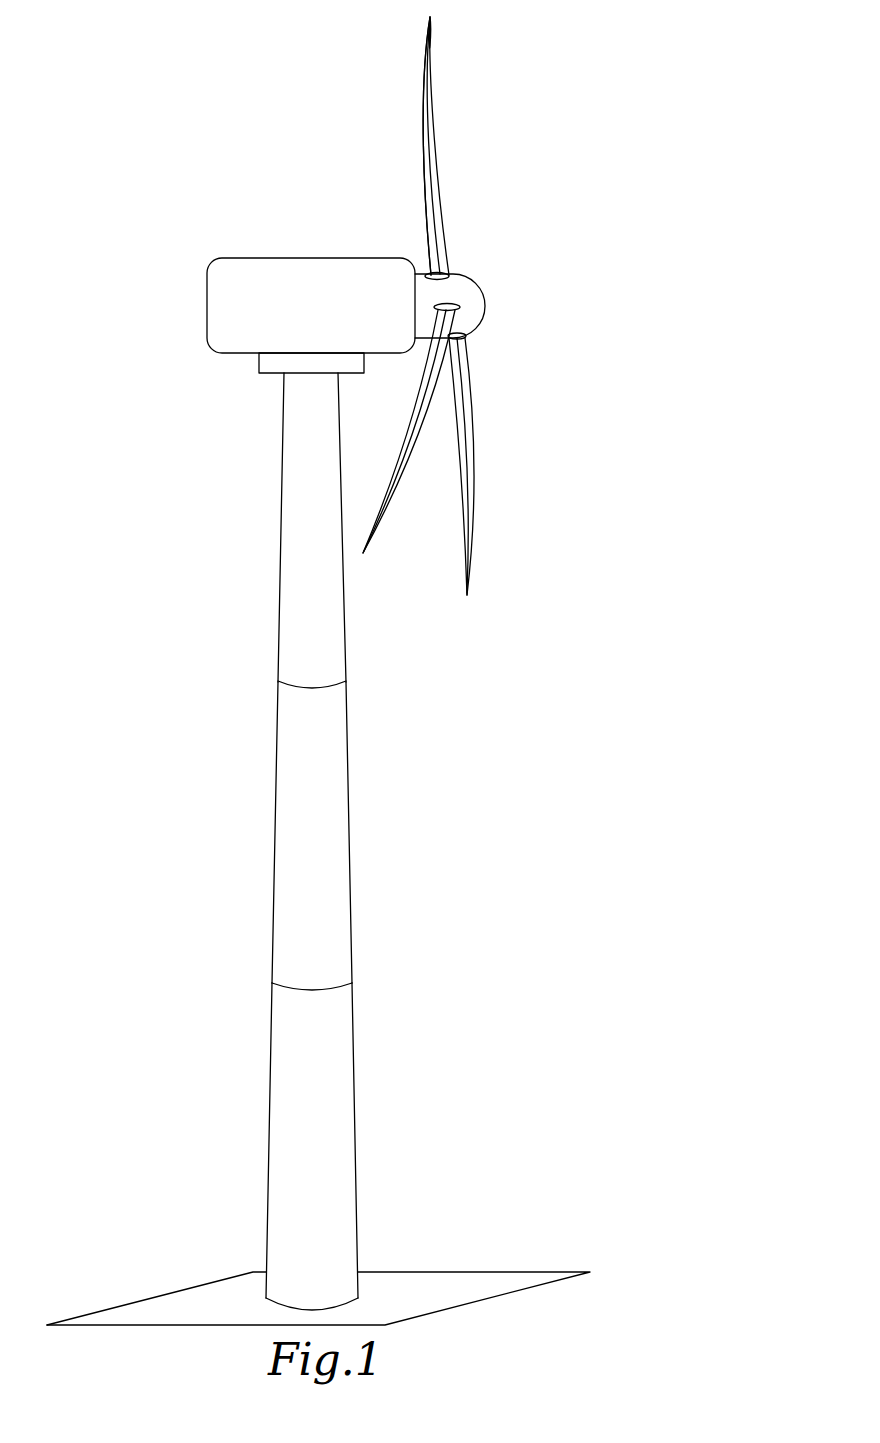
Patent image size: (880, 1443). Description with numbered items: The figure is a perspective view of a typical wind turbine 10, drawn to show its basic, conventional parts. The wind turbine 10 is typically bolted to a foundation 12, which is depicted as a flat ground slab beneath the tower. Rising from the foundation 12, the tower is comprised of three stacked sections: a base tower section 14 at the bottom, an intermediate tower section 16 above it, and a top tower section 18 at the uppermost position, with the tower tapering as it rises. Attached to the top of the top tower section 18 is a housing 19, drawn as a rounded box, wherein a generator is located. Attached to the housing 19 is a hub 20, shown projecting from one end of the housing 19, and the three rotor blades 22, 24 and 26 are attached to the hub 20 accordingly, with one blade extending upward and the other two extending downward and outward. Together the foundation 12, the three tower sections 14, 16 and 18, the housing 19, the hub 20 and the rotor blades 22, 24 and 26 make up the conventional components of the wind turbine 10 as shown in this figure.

The wind turbine 10 is at (80, 158).
The foundation 12 is at (157, 1303).
The base tower section 14 is at (280, 1130).
The intermediate tower section 16 is at (288, 798).
The top tower section 18 is at (295, 512).
The housing 19 is at (238, 258).
The hub 20 is at (477, 287).
The rotor blade 22 is at (435, 178).
The rotor blade 24 is at (474, 407).
The rotor blade 26 is at (393, 500).